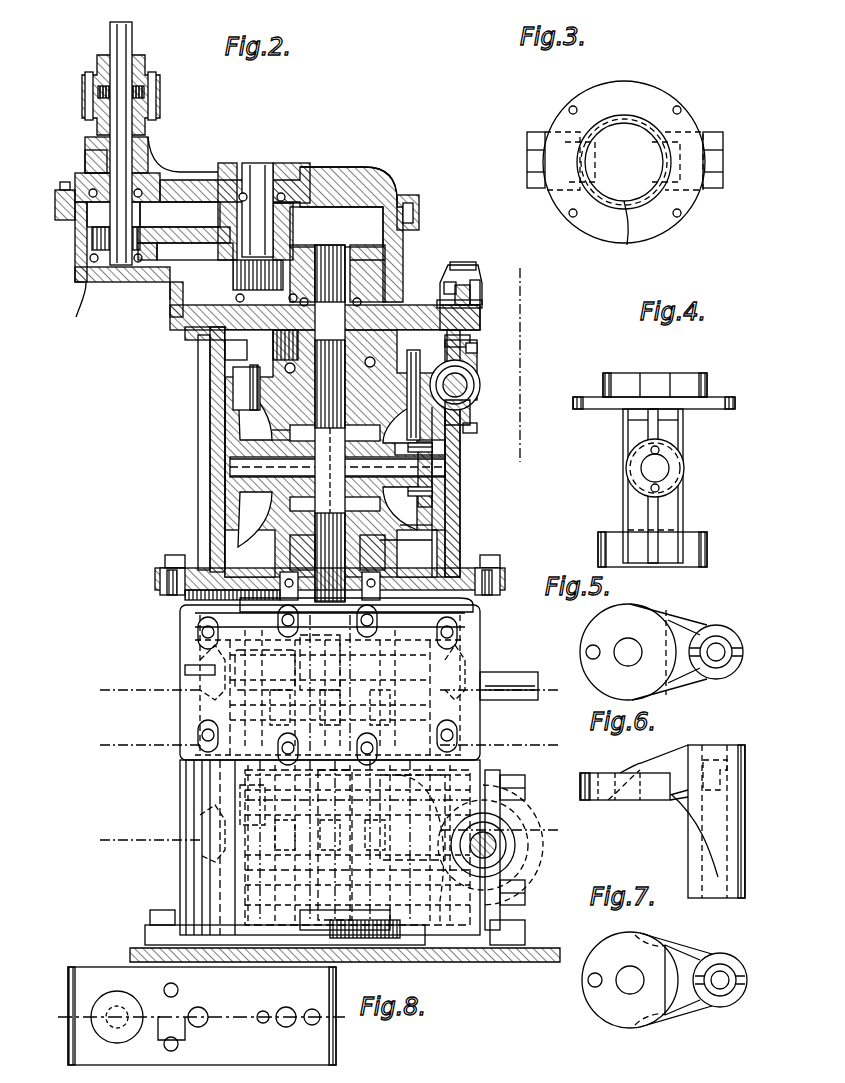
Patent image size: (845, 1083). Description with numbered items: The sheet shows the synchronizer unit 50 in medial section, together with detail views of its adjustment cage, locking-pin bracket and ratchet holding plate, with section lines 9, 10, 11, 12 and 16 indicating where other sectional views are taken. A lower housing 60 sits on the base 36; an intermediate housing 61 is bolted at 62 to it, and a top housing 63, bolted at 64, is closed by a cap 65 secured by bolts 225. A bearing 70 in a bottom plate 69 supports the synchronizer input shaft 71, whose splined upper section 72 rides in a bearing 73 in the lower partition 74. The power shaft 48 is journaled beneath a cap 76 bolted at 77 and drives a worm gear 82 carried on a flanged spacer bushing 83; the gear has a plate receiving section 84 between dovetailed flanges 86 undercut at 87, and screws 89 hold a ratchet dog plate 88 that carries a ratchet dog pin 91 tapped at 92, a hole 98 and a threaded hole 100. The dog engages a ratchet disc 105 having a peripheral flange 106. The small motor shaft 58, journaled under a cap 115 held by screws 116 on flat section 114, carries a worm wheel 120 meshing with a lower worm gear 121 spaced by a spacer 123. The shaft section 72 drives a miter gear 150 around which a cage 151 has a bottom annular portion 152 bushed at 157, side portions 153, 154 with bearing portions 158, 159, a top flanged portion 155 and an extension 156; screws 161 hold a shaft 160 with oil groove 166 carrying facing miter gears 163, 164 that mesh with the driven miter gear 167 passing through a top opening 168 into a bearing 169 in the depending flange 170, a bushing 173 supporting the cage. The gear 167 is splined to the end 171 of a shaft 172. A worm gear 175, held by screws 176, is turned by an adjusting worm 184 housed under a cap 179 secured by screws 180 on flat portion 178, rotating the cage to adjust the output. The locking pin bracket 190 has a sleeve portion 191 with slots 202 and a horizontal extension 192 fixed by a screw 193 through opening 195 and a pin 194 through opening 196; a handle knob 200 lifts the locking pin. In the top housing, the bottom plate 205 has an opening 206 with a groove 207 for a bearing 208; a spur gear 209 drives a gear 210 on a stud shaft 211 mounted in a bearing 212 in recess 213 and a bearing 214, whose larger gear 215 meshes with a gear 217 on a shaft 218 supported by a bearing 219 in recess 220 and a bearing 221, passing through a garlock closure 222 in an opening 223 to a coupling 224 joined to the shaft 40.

In FIG. 2, the shaft 40 is at (118, 40).
In FIG. 2, the coupling 224 is at (80, 96).
In FIG. 2, the garlock closure 222 is at (85, 143).
In FIG. 2, the opening 223 is at (87, 158).
In FIG. 2, the bolt 225 is at (60, 188).
In FIG. 2, the bearing 221 is at (143, 192).
In FIG. 2, the stud shaft 211 is at (256, 205).
In FIG. 2, the bearing 214 is at (284, 194).
In FIG. 2, the shaft 172 is at (330, 245).
In FIG. 2, the cap 65 is at (355, 185).
In FIG. 2, the gear 215 is at (395, 226).
In FIG. 2, the bearing 212 is at (370, 262).
In FIG. 2, the locking pin bracket 190 is at (470, 265).
In FIG. 5, the locking pin bracket 190 is at (706, 614).
In FIG. 6, the locking pin bracket 190 is at (675, 823).
In FIG. 7, the locking pin bracket 190 is at (613, 1032).
In FIG. 2, the spur gear 209 is at (440, 282).
In FIG. 2, the handle knob 200 is at (475, 270).
In FIG. 2, the pin 194 is at (470, 288).
In FIG. 2, the section line 12 is at (505, 276).
In FIG. 2, the screw 193 is at (478, 290).
In FIG. 2, the horizontal extension 192 is at (485, 298).
In FIG. 5, the horizontal extension 192 is at (624, 606).
In FIG. 6, the horizontal extension 192 is at (603, 800).
In FIG. 7, the horizontal extension 192 is at (600, 1000).
In FIG. 2, the bottom plate 205 is at (472, 312).
In FIG. 2, the bearing 208 is at (366, 290).
In FIG. 2, the groove 207 is at (362, 302).
In FIG. 2, the shaft 218 is at (100, 215).
In FIG. 2, the gear 217 is at (92, 240).
In FIG. 2, the bearing recess 220 is at (90, 262).
In FIG. 2, the bearing 219 is at (78, 300).
In FIG. 2, the bolts 64 is at (172, 300).
In FIG. 2, the top housing 63 is at (175, 314).
In FIG. 2, the depending circular flange 170 is at (190, 333).
In FIG. 2, the gear 210 is at (233, 275).
In FIG. 2, the bearing recess 213 is at (236, 297).
In FIG. 2, the opening 206 is at (275, 346).
In FIG. 2, the bushing 173 is at (422, 351).
In FIG. 2, the top opening 168 is at (412, 378).
In FIG. 3, the top opening 168 is at (624, 122).
In FIG. 2, the flat portion 178 is at (470, 346).
In FIG. 2, the screws 180 is at (478, 350).
In FIG. 2, the cap 179 is at (478, 370).
In FIG. 2, the adjusting worm 184 is at (466, 386).
In FIG. 2, the bearing 169 is at (225, 346).
In FIG. 2, the screws 176 is at (245, 365).
In FIG. 2, the end 171 is at (250, 378).
In FIG. 2, the worm gear 175 is at (224, 388).
In FIG. 2, the driven miter gear 167 is at (248, 410).
In FIG. 2, the miter gear 163 is at (268, 430).
In FIG. 2, the bearing portion 159 is at (245, 440).
In FIG. 2, the intermediate housing 61 is at (205, 445).
In FIG. 2, the shaft 160 is at (240, 466).
In FIG. 2, the oil groove 166 is at (230, 480).
In FIG. 2, the side portion 153 is at (235, 505).
In FIG. 3, the side portion 153 is at (537, 132).
In FIG. 2, the bushing 157 is at (262, 540).
In FIG. 2, the bottom annular portion 152 is at (270, 552).
In FIG. 4, the bottom annular portion 152 is at (708, 553).
In FIG. 2, the drive unit 50 is at (110, 495).
In FIG. 2, the bolts 62 is at (165, 556).
In FIG. 2, the lower partition 74 is at (160, 580).
In FIG. 2, the top flanged portion 155 is at (470, 418).
In FIG. 3, the top flanged portion 155 is at (665, 225).
In FIG. 4, the top flanged portion 155 is at (718, 396).
In FIG. 2, the screws 161 is at (433, 447).
In FIG. 2, the bearing portion 158 is at (445, 465).
In FIG. 4, the bearing portion 158 is at (672, 465).
In FIG. 2, the cage 151 is at (452, 513).
In FIG. 3, the cage 151 is at (678, 90).
In FIG. 4, the cage 151 is at (700, 372).
In FIG. 2, the miter gear 164 is at (432, 526).
In FIG. 2, the side portion 154 is at (447, 530).
In FIG. 3, the side portion 154 is at (712, 138).
In FIG. 4, the side portion 154 is at (672, 510).
In FIG. 2, the miter gear 150 is at (422, 541).
In FIG. 2, the splined upper section 72 is at (390, 560).
In FIG. 2, the bearing 73 is at (400, 599).
In FIG. 2, the bolts 77 is at (200, 626).
In FIG. 2, the cap 76 is at (222, 648).
In FIG. 2, the section line 10 is at (122, 700).
In FIG. 2, the worm gear 82 is at (212, 672).
In FIG. 2, the flanged spacer bushing 83 is at (350, 636).
In FIG. 2, the plate receiving section 84 is at (372, 660).
In FIG. 2, the screws 89 is at (215, 695).
In FIG. 2, the section line 11 is at (105, 757).
In FIG. 2, the power shaft 48 is at (512, 674).
In FIG. 2, the undercut 87 is at (470, 727).
In FIG. 2, the peripheral flange 106 is at (245, 768).
In FIG. 2, the lower housing 60 is at (180, 790).
In FIG. 2, the dovetailed flanges 86 is at (212, 803).
In FIG. 2, the section line 16 is at (120, 850).
In FIG. 2, the lower worm gear 121 is at (210, 855).
In FIG. 2, the ratchet disc 105 is at (405, 780).
In FIG. 2, the spacer 123 is at (336, 860).
In FIG. 2, the synchronizer input shaft 71 is at (315, 900).
In FIG. 2, the bearing 70 is at (362, 925).
In FIG. 2, the worm wheel 120 is at (455, 880).
In FIG. 2, the bottom plate 69 is at (440, 922).
In FIG. 2, the cap 115 is at (515, 860).
In FIG. 2, the small motor shaft 58 is at (492, 853).
In FIG. 2, the flat section 114 is at (500, 776).
In FIG. 2, the screws 116 is at (515, 786).
In FIG. 2, the base 36 is at (500, 964).
In FIG. 2, the ratchet dog plate 88 is at (88, 966).
In FIG. 8, the ratchet dog pin 91 is at (100, 1030).
In FIG. 8, the tapped hole 92 is at (108, 1010).
In FIG. 8, the hole 98 is at (260, 1010).
In FIG. 8, the threaded hole 100 is at (312, 1026).
In FIG. 8, the section line 9 is at (58, 1002).
In FIG. 3, the extension 156 is at (635, 236).
In FIG. 4, the extension 156 is at (618, 382).
In FIG. 5, the opening 195 is at (634, 642).
In FIG. 6, the opening 195 is at (672, 760).
In FIG. 5, the opening 196 is at (596, 658).
In FIG. 6, the opening 196 is at (630, 760).
In FIG. 5, the sleeve portion 191 is at (726, 633).
In FIG. 6, the sleeve portion 191 is at (715, 893).
In FIG. 7, the sleeve portion 191 is at (720, 1007).
In FIG. 5, the slots 202 is at (700, 668).
In FIG. 6, the slots 202 is at (670, 804).
In FIG. 7, the slots 202 is at (748, 972).